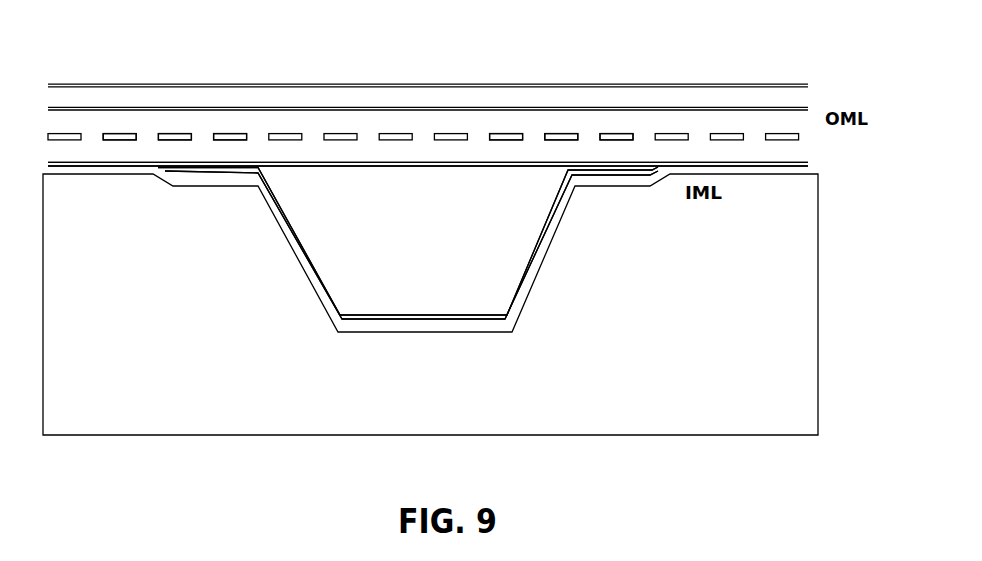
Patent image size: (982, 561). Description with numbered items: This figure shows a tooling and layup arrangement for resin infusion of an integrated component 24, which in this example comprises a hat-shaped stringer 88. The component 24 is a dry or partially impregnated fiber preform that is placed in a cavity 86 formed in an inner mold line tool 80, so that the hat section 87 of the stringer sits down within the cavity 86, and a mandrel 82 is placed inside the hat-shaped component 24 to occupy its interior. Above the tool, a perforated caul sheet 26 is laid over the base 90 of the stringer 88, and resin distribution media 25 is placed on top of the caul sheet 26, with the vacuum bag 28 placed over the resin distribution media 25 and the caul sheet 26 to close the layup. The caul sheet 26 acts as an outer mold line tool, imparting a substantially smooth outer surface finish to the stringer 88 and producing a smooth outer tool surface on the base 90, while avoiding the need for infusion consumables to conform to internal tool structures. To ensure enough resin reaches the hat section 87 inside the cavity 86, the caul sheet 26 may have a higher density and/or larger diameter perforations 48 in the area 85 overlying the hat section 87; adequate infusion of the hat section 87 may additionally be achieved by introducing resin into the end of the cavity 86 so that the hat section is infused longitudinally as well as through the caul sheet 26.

The fiber component 24 is at (377, 162).
The resin distribution media 25 is at (677, 107).
The perforated caul sheet 26 is at (290, 133).
The vacuum bag 28 is at (130, 83).
The perforations 48 is at (148, 126).
The IML tool 80 is at (712, 397).
The mandrel 82 is at (478, 212).
The area overlying the hat section 85 is at (227, 121).
The cavity 86 is at (350, 330).
The hat section 87 is at (447, 320).
The hat-shaped stringer 88 is at (315, 163).
The base of the stringer 90 is at (528, 146).